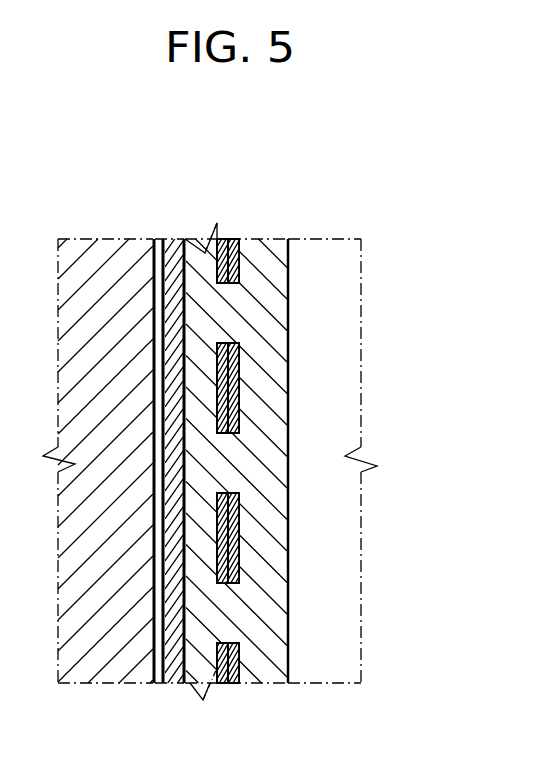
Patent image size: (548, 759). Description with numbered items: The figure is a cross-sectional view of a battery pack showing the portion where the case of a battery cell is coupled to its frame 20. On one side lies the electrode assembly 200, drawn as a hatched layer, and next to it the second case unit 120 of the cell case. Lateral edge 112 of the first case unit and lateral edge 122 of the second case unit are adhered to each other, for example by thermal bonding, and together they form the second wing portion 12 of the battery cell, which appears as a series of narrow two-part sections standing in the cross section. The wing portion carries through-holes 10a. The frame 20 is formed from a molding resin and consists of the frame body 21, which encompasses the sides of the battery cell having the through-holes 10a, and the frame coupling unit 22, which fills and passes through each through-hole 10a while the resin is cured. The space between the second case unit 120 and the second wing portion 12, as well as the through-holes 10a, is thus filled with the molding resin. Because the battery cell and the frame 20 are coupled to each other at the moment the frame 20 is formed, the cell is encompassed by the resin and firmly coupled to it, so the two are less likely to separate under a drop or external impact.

The electrode assembly 200 is at (107, 247).
The second case unit 120 is at (177, 247).
The second wing portion 12 is at (234, 414).
The lateral edge of the first case unit 112 is at (221, 238).
The lateral edge of the second case unit 122 is at (240, 238).
The through-hole 10a is at (238, 288).
The frame 20 is at (331, 461).
The frame coupling unit 22 is at (228, 322).
The frame body 21 is at (278, 387).